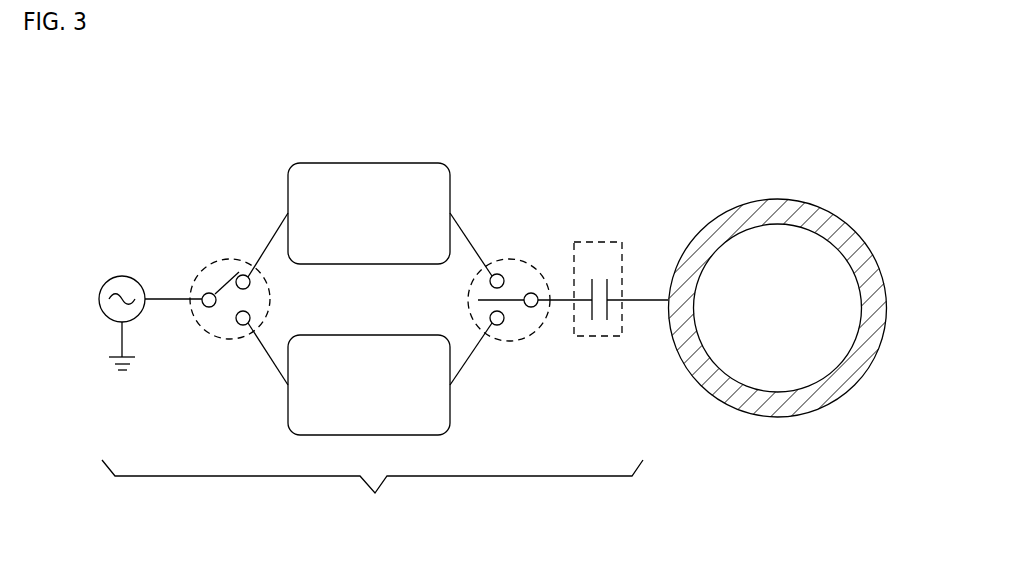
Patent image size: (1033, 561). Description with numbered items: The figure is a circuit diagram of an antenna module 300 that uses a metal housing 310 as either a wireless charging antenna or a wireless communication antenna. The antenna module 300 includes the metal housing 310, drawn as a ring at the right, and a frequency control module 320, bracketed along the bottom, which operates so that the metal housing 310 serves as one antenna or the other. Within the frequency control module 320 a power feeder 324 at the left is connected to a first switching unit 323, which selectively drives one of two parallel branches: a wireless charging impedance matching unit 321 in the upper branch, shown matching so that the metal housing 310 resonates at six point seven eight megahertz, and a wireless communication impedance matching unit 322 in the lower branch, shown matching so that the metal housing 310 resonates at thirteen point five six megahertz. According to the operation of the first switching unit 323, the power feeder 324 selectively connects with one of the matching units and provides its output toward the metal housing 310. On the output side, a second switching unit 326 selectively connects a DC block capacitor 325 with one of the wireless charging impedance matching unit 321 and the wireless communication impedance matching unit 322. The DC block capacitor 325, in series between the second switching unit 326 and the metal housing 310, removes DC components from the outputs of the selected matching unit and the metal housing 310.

The antenna module 300 is at (291, 84).
The metal housing 310 is at (777, 200).
The frequency control module 320 is at (372, 490).
The wireless charging impedance matching unit 321 is at (368, 163).
The wireless communication impedance matching unit 322 is at (450, 400).
The first switching unit 323 is at (230, 260).
The power feeder 324 is at (103, 282).
The DC block capacitor 325 is at (597, 336).
The second switching unit 326 is at (510, 258).